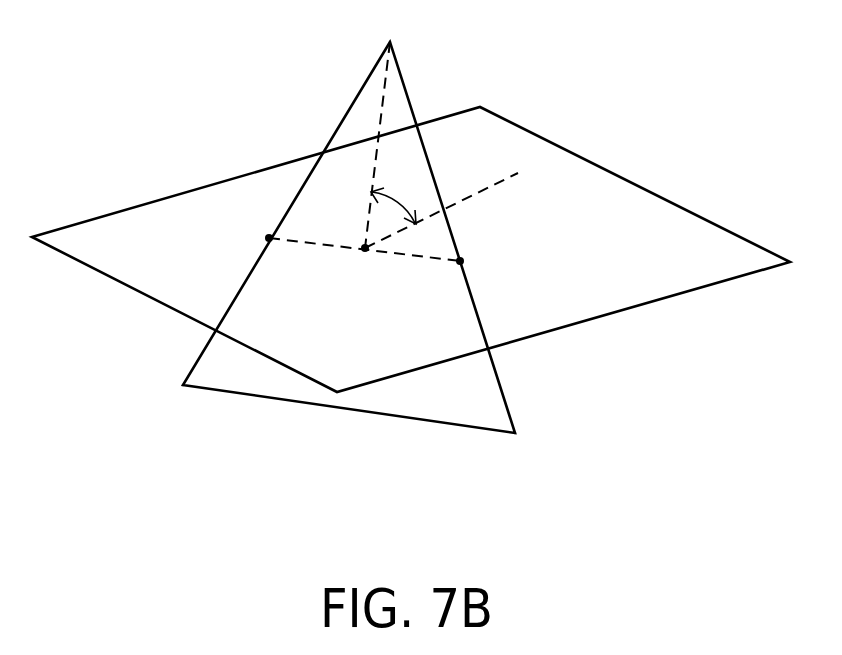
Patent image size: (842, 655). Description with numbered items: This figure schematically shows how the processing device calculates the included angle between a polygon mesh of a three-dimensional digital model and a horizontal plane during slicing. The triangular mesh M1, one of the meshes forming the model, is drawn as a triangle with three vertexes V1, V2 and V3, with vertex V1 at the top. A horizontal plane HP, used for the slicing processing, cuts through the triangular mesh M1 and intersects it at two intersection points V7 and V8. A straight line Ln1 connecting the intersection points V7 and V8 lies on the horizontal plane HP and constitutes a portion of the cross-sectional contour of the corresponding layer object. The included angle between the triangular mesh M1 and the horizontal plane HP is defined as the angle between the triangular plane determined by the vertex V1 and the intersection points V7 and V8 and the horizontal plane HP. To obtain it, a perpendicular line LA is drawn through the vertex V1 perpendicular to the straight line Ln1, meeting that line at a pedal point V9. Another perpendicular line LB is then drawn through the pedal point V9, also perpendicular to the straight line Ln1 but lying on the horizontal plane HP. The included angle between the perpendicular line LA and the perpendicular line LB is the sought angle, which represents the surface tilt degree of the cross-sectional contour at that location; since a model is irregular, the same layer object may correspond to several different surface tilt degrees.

The horizontal plane HP is at (679, 237).
The triangular mesh M1 is at (468, 398).
The perpendicular line LA is at (382, 95).
The perpendicular line LB is at (490, 190).
The straight line Ln1 is at (435, 260).
The vertex V1 is at (391, 23).
The vertex V2 is at (166, 392).
The vertex V3 is at (533, 441).
The intersection point V7 is at (251, 234).
The intersection point V8 is at (479, 261).
The pedal point V9 is at (360, 268).